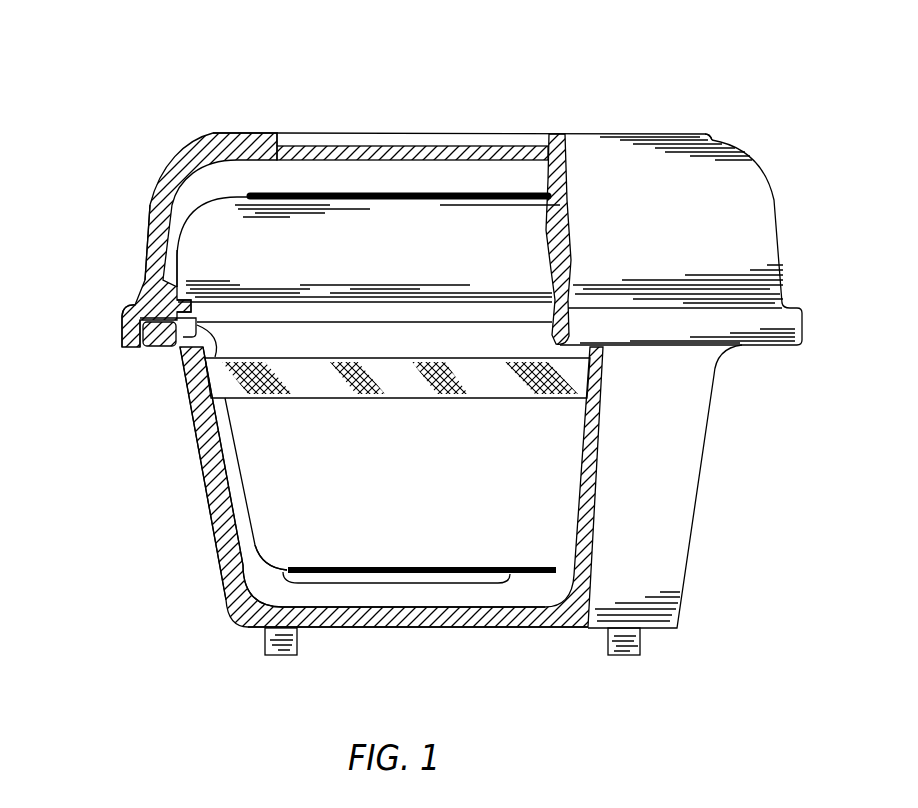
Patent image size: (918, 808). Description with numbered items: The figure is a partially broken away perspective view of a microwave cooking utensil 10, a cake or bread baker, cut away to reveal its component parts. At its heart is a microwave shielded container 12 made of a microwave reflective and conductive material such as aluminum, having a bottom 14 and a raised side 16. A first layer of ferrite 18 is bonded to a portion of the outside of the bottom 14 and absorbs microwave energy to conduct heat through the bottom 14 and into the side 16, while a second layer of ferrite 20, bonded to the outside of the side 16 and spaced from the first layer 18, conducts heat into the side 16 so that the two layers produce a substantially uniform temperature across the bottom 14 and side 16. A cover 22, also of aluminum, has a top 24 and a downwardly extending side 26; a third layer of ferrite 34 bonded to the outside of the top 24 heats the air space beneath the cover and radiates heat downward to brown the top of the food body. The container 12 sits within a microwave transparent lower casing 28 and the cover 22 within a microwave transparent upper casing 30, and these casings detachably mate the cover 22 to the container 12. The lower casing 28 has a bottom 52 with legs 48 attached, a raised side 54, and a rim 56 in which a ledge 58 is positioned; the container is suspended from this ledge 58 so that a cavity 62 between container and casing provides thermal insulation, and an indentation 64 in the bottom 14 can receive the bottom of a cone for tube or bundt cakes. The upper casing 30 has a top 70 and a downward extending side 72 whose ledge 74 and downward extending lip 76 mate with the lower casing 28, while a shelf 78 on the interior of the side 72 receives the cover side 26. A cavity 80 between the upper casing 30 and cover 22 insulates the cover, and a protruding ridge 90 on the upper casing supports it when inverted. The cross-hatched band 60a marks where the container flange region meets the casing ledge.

The microwave cooking utensil 10 is at (742, 114).
The microwave shielded container 12 is at (237, 497).
The container bottom 14 is at (242, 599).
The container side 16 is at (270, 518).
The first layer of ferrite 18 is at (367, 575).
The second layer of ferrite 20 is at (227, 400).
The cover 22 is at (183, 203).
The cover top 24 is at (229, 195).
The cover side 26 is at (172, 245).
The lower casing 28 is at (706, 460).
The upper casing 30 is at (780, 203).
The third layer of ferrite 34 is at (276, 192).
The legs 48 is at (610, 657).
The lower casing bottom 52 is at (467, 622).
The lower casing raised side 54 is at (212, 462).
The rim 56 is at (162, 342).
The ledge 58 is at (178, 394).
The insulation band 60a is at (208, 392).
The cavity 62 is at (410, 598).
The indentation 64 is at (488, 578).
The upper casing top 70 is at (305, 145).
The upper casing side 72 is at (157, 206).
The ledge 74 is at (130, 310).
The downward extending lip 76 is at (121, 330).
The shelf 78 is at (193, 310).
The cavity 80 is at (375, 168).
The ridge 90 is at (708, 134).